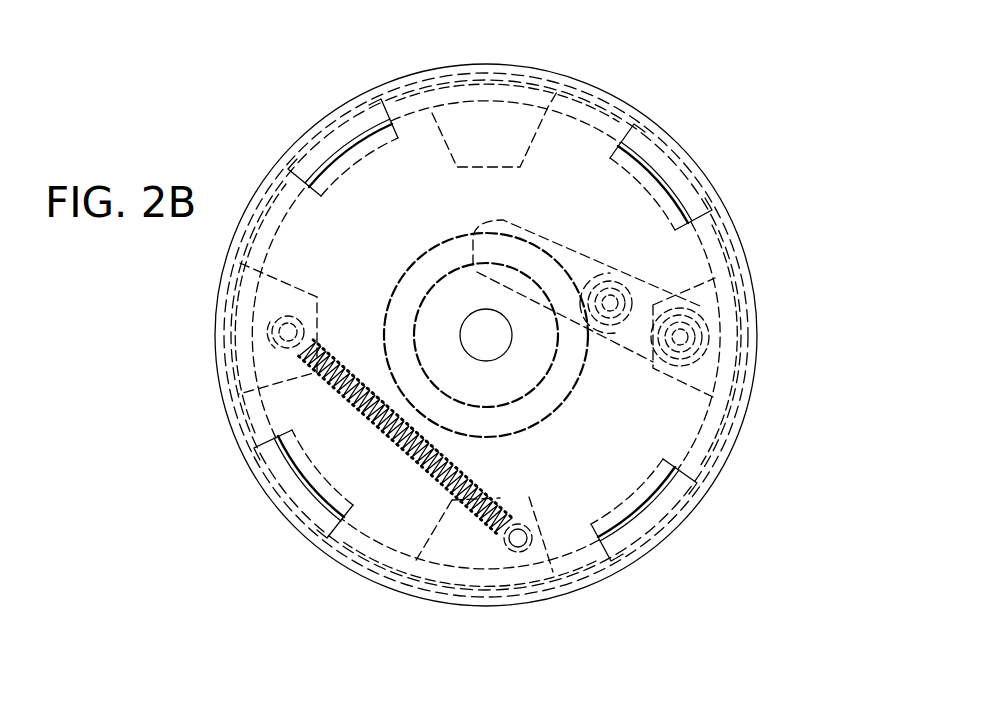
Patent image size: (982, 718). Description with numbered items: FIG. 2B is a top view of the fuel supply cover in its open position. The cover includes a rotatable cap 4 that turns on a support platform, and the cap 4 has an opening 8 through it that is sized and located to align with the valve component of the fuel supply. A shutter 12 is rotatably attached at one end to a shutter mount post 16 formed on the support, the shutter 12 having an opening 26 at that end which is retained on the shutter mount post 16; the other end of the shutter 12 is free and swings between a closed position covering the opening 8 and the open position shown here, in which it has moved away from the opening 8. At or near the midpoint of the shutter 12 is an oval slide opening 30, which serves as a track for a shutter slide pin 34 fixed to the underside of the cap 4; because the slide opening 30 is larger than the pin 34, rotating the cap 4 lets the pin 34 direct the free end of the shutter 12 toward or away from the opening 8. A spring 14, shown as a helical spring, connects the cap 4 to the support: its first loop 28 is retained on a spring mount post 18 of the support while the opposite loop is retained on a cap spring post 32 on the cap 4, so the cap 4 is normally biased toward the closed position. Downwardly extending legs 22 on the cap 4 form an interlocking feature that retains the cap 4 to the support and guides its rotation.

The rotatable cap 4 is at (757, 378).
The opening 8 is at (490, 327).
The shutter 12 is at (640, 343).
The spring 14 is at (370, 448).
The shutter mount post 16 is at (774, 320).
The spring mount post 18 is at (232, 201).
The downwardly extending leg 22 is at (688, 172).
The opening 26 is at (680, 337).
The first loop 28 is at (290, 325).
The slide opening 30 is at (598, 283).
The cap spring post 32 is at (523, 0).
The shutter slide pin 34 is at (612, 303).